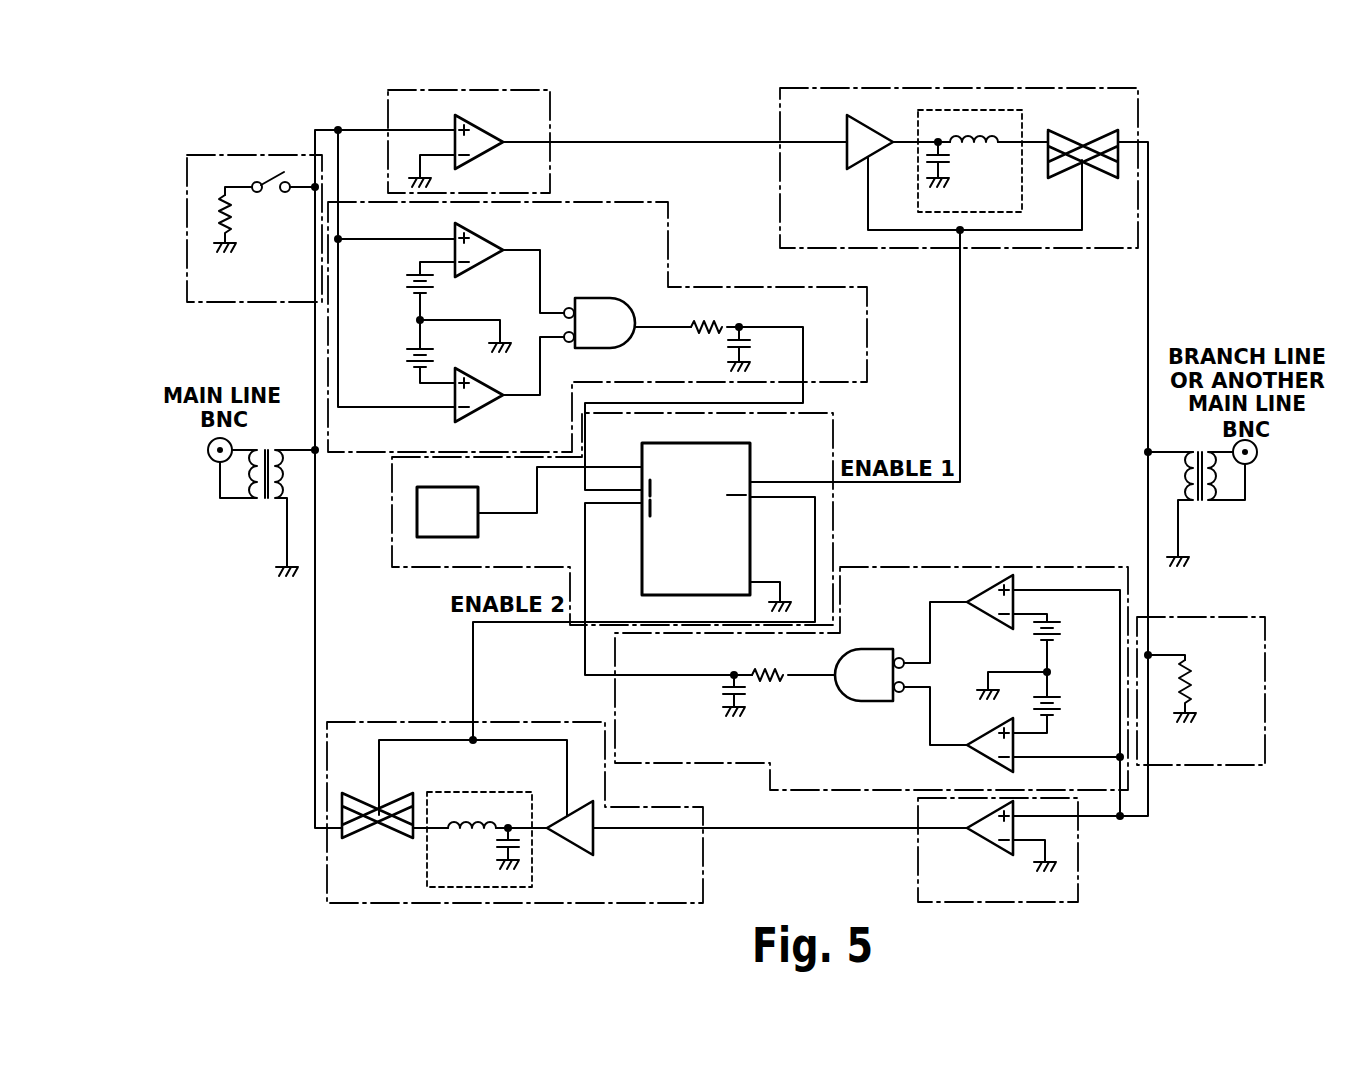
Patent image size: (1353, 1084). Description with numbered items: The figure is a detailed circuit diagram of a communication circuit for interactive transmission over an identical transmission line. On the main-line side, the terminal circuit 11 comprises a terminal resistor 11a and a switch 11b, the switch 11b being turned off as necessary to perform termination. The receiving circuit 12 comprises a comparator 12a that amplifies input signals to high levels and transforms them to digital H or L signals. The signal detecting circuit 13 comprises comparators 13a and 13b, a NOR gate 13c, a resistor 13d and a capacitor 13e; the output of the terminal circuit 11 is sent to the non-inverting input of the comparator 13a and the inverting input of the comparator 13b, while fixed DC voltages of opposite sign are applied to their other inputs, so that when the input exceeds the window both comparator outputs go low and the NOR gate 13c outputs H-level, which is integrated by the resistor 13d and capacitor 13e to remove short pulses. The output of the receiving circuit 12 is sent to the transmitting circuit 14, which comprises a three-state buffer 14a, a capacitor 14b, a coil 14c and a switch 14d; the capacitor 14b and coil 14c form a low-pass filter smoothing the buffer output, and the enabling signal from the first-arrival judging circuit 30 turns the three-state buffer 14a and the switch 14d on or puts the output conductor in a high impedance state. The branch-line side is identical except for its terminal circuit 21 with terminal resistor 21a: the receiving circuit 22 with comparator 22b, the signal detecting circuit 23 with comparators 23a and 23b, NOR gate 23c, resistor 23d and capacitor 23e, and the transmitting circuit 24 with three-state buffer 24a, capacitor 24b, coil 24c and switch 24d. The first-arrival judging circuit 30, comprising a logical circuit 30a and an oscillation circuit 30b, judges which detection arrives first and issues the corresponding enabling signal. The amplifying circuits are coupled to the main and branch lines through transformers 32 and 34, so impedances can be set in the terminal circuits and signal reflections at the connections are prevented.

The terminal circuit 11 is at (254, 249).
The terminal resistor 11a is at (232, 232).
The switch 11b is at (280, 196).
The receiving circuit 12 is at (495, 142).
The comparator 12a is at (474, 118).
The signal detecting circuit 13 is at (597, 327).
The comparator 13a is at (486, 216).
The comparator 13b is at (486, 361).
The NOR gate 13c is at (597, 298).
The resistor 13d is at (698, 334).
The capacitor 13e is at (752, 343).
The transmitting circuit 14 is at (987, 168).
The 3-state buffer 14a is at (855, 166).
The capacitor 14b is at (950, 172).
The coil 14c is at (952, 138).
The switch 14d is at (1105, 180).
The terminal circuit 21 is at (1219, 682).
The terminal resistor 21a is at (1192, 688).
The receiving circuit 22 is at (1027, 850).
The comparator 22b is at (985, 846).
The signal detecting circuit 23 is at (871, 663).
The comparator 23a is at (976, 593).
The comparator 23b is at (986, 740).
The NOR gate 23c is at (872, 639).
The resistor 23d is at (758, 668).
The capacitor 23e is at (748, 690).
The transmitting circuit 24 is at (544, 815).
The 3-state buffer 24a is at (596, 836).
The capacitor 24b is at (520, 822).
The coil 24c is at (462, 820).
The switch 24d is at (397, 792).
The first-arrival judging circuit 30 is at (639, 520).
The logical circuit 30a is at (752, 462).
The oscillation circuit 30b is at (479, 528).
The transformer 32 is at (261, 508).
The transformer 34 is at (1205, 512).